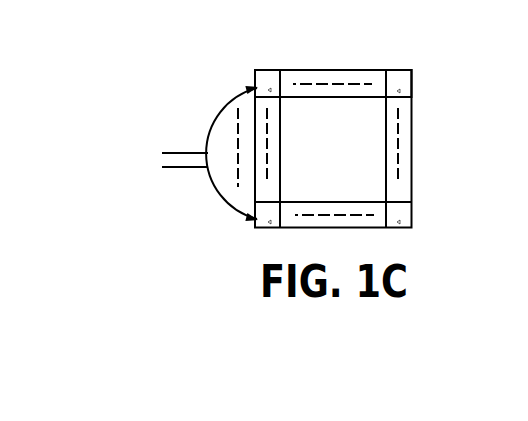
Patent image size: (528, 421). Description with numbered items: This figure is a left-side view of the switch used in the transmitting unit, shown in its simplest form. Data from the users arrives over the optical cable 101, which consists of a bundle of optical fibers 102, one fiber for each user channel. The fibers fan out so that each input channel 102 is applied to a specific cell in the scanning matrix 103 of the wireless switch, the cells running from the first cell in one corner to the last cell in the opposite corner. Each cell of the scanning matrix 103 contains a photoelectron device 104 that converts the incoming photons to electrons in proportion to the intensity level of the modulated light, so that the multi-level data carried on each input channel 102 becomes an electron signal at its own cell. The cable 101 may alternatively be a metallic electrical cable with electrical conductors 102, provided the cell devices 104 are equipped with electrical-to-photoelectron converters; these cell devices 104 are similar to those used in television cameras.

The optical cable 101 is at (182, 157).
The optical fiber 102 is at (222, 112).
The scanning matrix 103 is at (344, 69).
The photoelectron device 104 is at (410, 89).